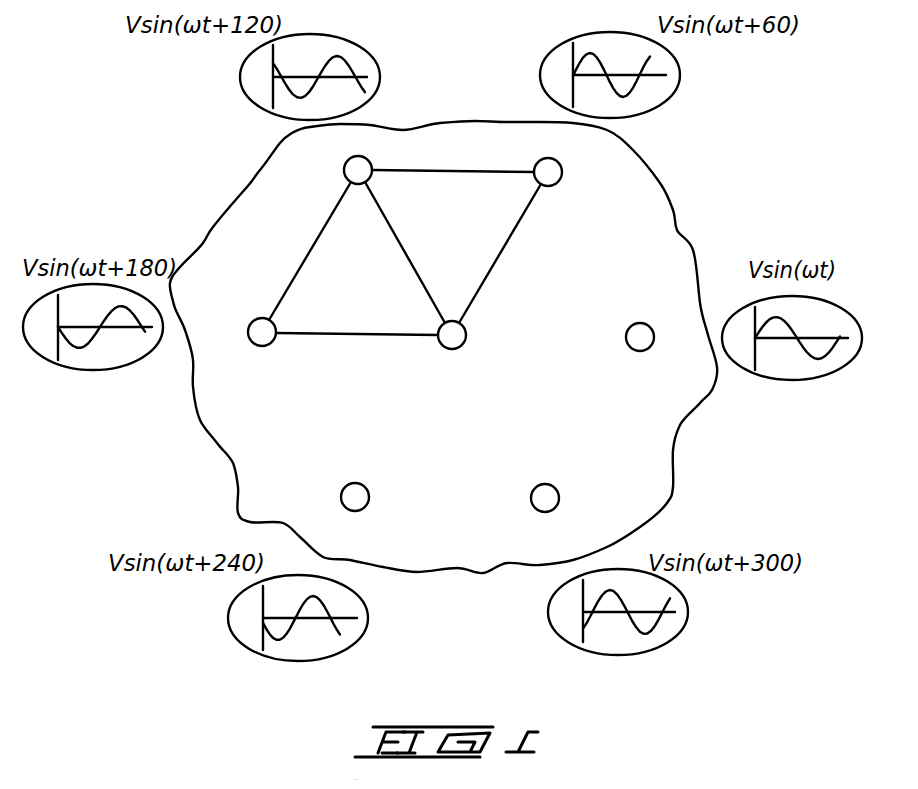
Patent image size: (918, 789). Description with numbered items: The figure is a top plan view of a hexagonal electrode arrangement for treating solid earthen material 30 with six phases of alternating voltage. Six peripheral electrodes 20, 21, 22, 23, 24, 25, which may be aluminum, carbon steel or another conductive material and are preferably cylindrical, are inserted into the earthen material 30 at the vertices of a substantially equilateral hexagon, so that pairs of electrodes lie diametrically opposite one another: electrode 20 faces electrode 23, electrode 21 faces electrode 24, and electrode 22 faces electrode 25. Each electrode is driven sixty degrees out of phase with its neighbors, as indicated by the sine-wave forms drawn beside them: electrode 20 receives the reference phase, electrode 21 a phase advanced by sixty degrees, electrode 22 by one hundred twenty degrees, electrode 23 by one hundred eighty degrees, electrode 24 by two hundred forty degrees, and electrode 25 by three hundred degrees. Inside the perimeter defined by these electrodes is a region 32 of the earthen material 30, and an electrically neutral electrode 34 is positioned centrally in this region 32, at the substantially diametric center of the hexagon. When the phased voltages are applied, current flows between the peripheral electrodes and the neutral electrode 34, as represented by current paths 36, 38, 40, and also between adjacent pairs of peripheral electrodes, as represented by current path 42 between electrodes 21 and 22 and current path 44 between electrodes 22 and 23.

The electrode 20 is at (640, 340).
The electrode 21 is at (548, 172).
The electrode 22 is at (352, 170).
The electrode 23 is at (262, 335).
The electrode 24 is at (355, 497).
The electrode 25 is at (545, 498).
The solid earthen material 30 is at (653, 482).
The region 32 is at (347, 440).
The neutral electrode 34 is at (452, 337).
The current path 36 is at (417, 273).
The current path 38 is at (523, 220).
The current path 40 is at (350, 337).
The current path 42 is at (423, 167).
The current path 44 is at (292, 282).